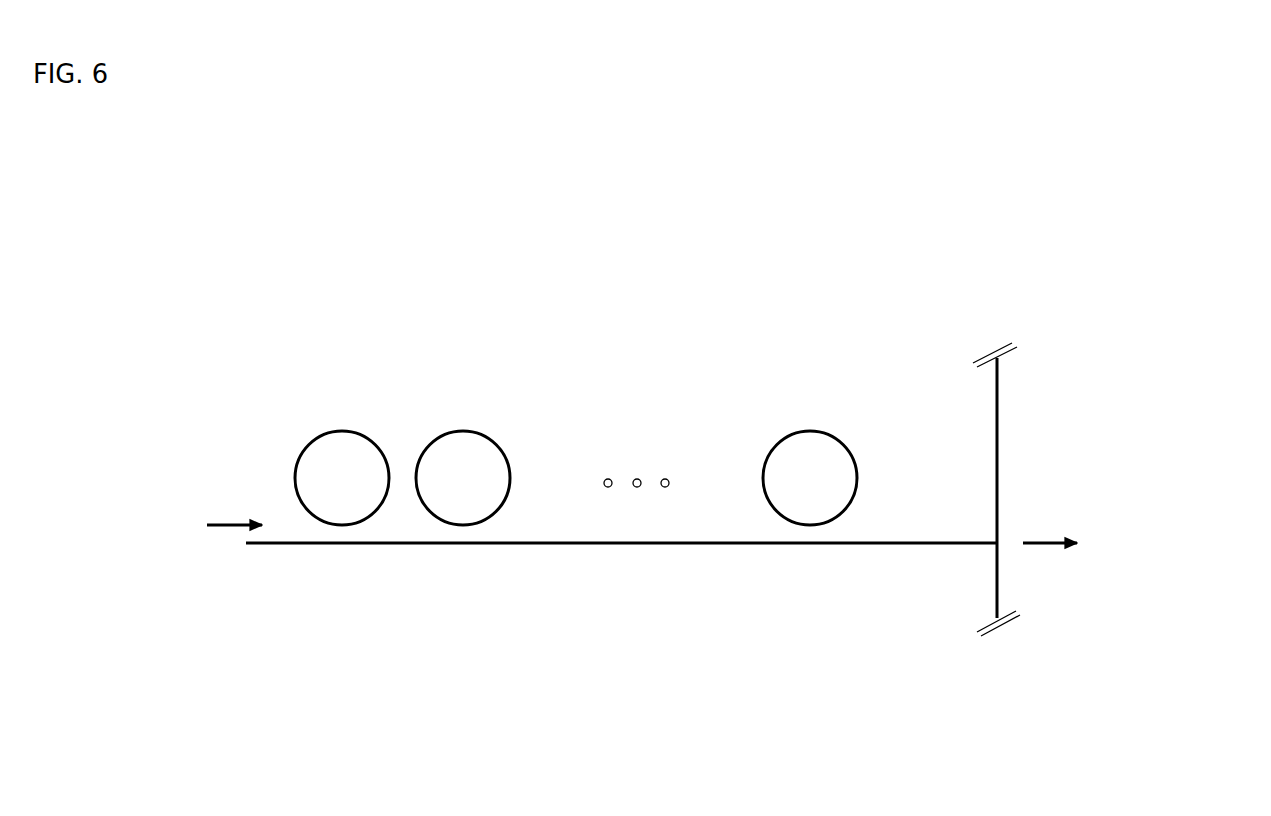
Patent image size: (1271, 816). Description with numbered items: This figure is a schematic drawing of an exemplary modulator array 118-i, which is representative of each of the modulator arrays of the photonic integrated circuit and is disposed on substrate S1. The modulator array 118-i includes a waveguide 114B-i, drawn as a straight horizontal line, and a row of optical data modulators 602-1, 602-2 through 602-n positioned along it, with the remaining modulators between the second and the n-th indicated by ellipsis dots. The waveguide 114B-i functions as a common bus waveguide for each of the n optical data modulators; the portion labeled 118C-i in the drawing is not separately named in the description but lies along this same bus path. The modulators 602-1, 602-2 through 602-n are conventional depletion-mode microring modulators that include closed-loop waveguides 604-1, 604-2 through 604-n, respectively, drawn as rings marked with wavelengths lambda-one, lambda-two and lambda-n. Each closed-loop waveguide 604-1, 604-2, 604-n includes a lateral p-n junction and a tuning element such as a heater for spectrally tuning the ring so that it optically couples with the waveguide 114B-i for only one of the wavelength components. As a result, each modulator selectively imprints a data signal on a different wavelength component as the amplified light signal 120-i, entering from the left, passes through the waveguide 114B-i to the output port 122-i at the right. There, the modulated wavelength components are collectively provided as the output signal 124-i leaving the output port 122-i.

The modulator array 118-i is at (354, 250).
The optical data modulator 602-1 is at (280, 357).
The optical data modulator 602-2 is at (400, 357).
The optical data modulator 602-n is at (748, 357).
The closed-loop waveguide 604-1 is at (342, 431).
The closed-loop waveguide 604-2 is at (463, 431).
The closed-loop waveguide 604-n is at (810, 431).
The amplified light signal 120-i is at (230, 523).
The output signal 124-i is at (1043, 542).
The waveguide 114B-i is at (283, 545).
The bus waveguide 118C-i is at (895, 545).
The output port 122-i is at (1014, 556).
The substrate S1 is at (668, 627).